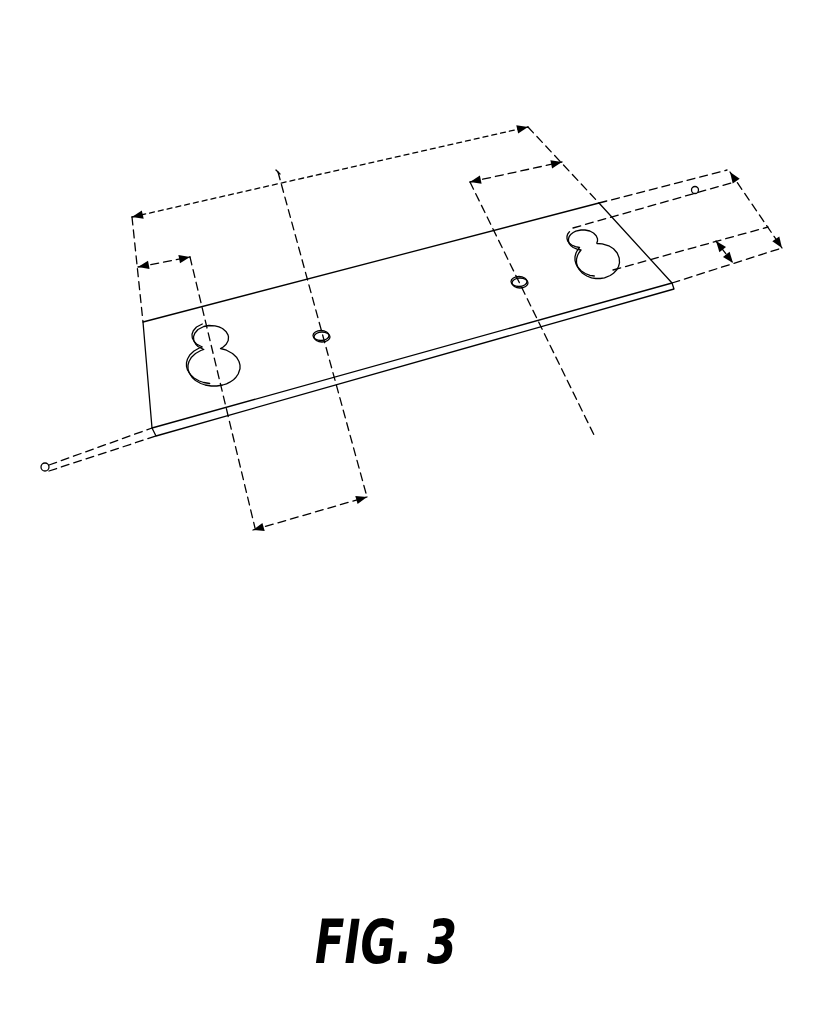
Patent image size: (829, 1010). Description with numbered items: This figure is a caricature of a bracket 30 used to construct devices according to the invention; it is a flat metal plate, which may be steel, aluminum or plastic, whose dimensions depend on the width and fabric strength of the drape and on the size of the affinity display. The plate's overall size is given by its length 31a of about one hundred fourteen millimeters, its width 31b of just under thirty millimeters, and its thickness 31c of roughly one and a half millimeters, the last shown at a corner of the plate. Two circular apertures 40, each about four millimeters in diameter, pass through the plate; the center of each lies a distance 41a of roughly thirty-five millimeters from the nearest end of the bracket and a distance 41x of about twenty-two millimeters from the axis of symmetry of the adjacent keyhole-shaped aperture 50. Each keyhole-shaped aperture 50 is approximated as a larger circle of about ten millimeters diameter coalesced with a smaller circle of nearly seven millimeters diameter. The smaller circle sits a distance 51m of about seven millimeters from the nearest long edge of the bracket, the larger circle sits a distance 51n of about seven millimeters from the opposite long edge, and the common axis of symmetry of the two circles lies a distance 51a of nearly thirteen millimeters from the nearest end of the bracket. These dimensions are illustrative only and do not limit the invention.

The bracket 30 is at (417, 308).
The bracket length dimension 31a is at (362, 163).
The bracket width dimension 31b is at (756, 200).
The bracket thickness dimension 31c is at (42, 470).
The circular aperture 40 is at (346, 349).
The circular aperture end offset dimension 41a is at (507, 165).
The circular aperture to keyhole axis dimension 41x is at (318, 525).
The keyhole-shaped aperture 50 is at (606, 289).
The keyhole axis end offset dimension 51a is at (163, 257).
The smaller circle edge offset dimension 51m is at (695, 186).
The larger circle edge offset dimension 51n is at (722, 252).